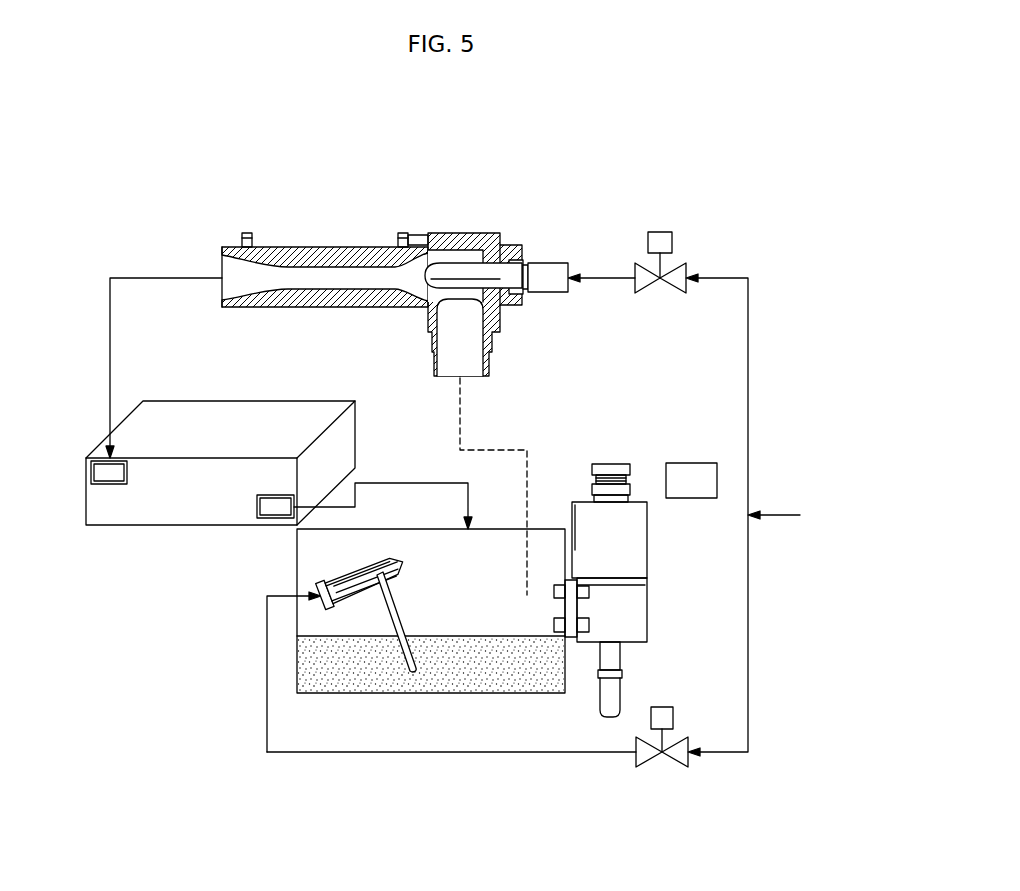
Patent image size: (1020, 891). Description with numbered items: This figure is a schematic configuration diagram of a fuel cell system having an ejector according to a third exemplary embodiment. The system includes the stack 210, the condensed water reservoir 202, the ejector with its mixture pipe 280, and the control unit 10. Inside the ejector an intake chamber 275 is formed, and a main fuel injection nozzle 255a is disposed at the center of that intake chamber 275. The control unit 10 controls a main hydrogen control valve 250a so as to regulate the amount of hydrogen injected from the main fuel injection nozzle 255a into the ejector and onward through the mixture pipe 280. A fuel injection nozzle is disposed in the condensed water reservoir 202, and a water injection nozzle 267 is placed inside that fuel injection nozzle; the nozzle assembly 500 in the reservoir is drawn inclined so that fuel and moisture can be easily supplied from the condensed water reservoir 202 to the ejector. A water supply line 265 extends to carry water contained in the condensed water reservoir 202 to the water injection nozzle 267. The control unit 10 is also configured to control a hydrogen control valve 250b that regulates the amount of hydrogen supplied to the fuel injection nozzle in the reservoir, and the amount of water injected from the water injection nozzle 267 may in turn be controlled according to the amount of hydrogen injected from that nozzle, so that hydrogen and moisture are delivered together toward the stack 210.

The control unit 10 is at (688, 462).
The condensed water reservoir 202 is at (468, 694).
The stack 210 is at (238, 404).
The main hydrogen control valve 250a is at (662, 293).
The hydrogen control valve 250b is at (671, 702).
The main fuel injection nozzle 255a is at (450, 274).
The water supply line 265 is at (415, 676).
The water injection nozzle 267 is at (388, 575).
The intake chamber 275 is at (472, 257).
The mixture pipe 280 is at (337, 249).
The nozzle assembly 500 is at (340, 574).